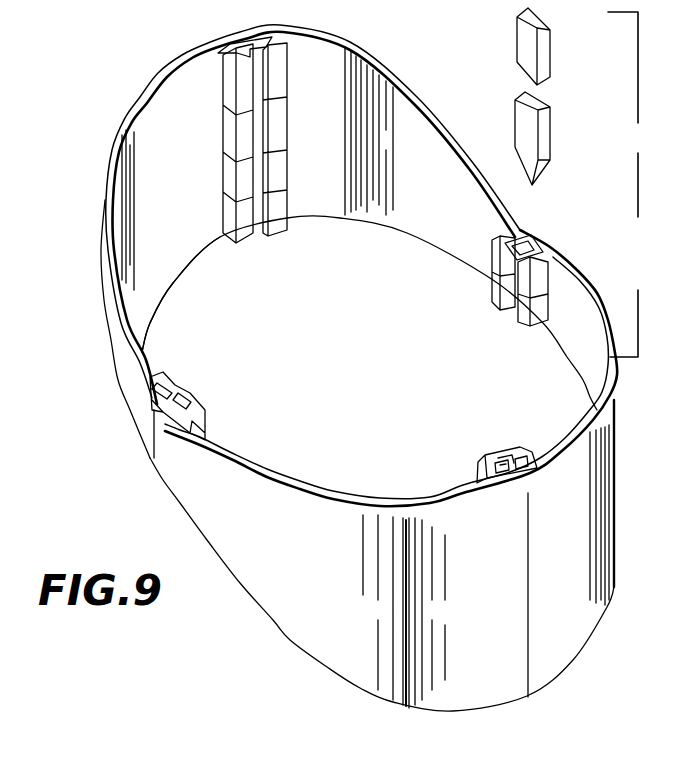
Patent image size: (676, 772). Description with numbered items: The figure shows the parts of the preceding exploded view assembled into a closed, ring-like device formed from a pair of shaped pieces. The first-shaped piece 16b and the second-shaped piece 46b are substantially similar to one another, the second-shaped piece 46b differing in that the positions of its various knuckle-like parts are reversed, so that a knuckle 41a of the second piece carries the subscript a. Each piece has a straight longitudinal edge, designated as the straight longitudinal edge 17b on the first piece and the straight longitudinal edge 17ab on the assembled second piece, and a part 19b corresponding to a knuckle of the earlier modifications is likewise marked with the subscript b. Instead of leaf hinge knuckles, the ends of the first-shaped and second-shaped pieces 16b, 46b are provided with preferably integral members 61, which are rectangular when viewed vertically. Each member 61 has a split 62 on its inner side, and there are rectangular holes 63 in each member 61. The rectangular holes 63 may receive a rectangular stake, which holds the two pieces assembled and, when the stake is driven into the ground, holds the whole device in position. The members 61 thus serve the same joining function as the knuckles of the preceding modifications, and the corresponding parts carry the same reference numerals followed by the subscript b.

The first-shaped piece 16b is at (140, 133).
The straight longitudinal edge 17ab is at (407, 233).
The straight longitudinal edge 17b is at (155, 278).
The knuckle-corresponding part 19b is at (199, 50).
The knuckle 41a is at (523, 48).
The second-shaped piece 46b is at (415, 106).
The integral member 61 is at (277, 128).
The split 62 is at (512, 296).
The rectangular hole 63 is at (167, 388).